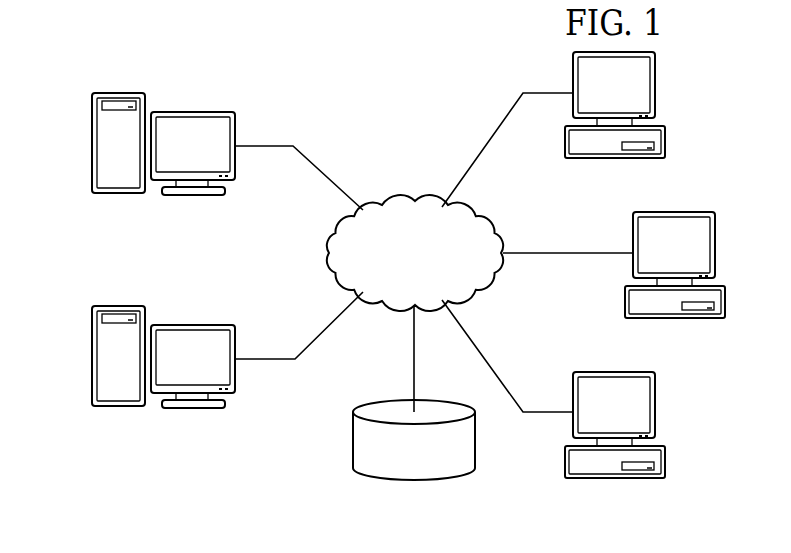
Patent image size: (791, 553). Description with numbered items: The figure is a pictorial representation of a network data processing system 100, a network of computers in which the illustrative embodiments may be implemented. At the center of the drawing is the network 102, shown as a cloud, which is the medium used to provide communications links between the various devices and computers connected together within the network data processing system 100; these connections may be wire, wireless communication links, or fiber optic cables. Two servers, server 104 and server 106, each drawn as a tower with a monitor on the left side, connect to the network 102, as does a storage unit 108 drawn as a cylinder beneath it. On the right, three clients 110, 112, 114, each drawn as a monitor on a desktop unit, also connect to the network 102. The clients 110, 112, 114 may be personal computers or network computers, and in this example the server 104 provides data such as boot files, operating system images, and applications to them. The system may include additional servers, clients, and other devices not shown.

The network data processing system 100 is at (299, 62).
The network 102 is at (410, 198).
The server 104 is at (92, 147).
The server 106 is at (92, 357).
The storage unit 108 is at (353, 442).
The client 110 is at (665, 143).
The client 112 is at (725, 305).
The client 114 is at (665, 463).